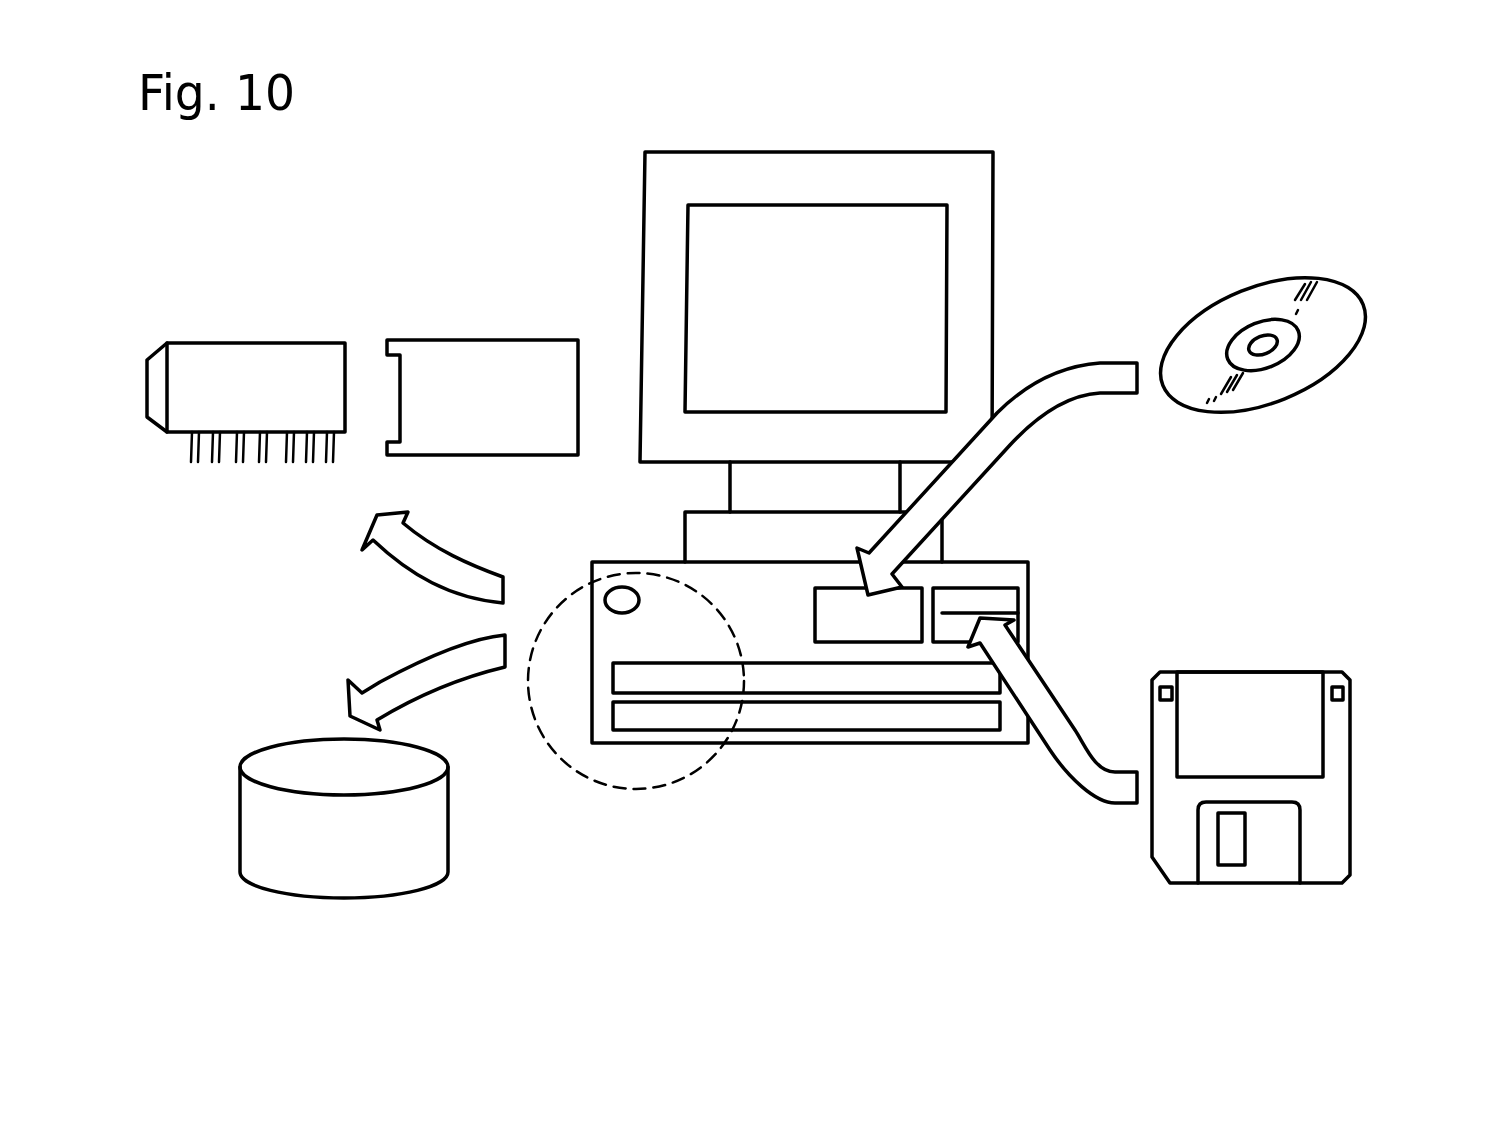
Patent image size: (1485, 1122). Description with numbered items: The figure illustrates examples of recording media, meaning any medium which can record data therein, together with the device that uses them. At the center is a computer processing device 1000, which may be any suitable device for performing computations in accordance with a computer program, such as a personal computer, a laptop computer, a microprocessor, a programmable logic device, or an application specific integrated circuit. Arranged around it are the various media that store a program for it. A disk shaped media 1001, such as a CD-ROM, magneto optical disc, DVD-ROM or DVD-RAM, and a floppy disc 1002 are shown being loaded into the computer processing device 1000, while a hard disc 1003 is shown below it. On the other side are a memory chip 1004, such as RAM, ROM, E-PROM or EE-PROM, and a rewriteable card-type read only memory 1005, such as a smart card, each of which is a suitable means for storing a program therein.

The computer processing device 1000 is at (992, 195).
The disk shaped media 1001 is at (1353, 290).
The floppy disc 1002 is at (1352, 698).
The hard disc 1003 is at (240, 840).
The memory chip 1004 is at (208, 343).
The rewriteable card-type read only memory 1005 is at (437, 340).